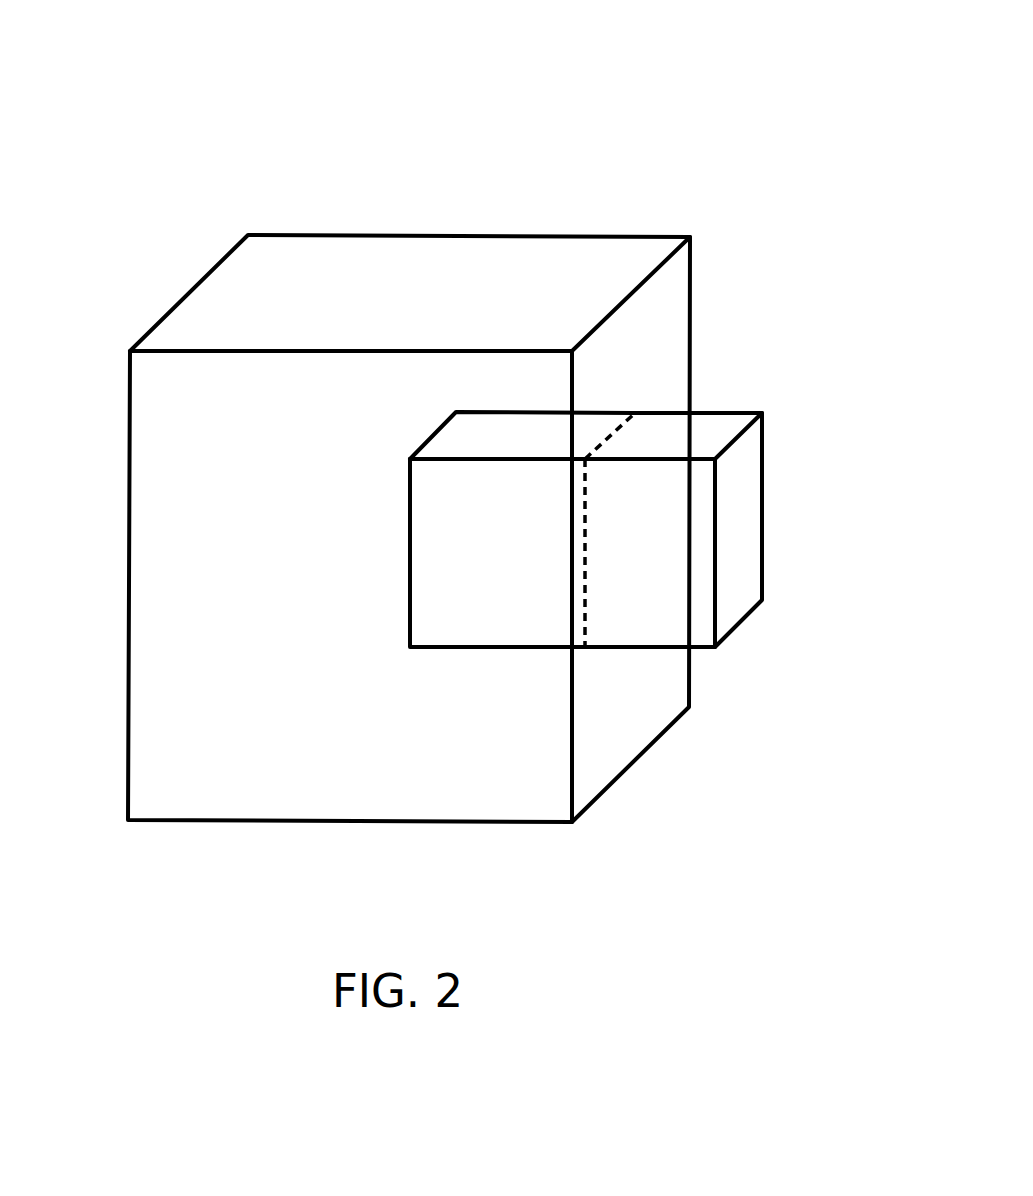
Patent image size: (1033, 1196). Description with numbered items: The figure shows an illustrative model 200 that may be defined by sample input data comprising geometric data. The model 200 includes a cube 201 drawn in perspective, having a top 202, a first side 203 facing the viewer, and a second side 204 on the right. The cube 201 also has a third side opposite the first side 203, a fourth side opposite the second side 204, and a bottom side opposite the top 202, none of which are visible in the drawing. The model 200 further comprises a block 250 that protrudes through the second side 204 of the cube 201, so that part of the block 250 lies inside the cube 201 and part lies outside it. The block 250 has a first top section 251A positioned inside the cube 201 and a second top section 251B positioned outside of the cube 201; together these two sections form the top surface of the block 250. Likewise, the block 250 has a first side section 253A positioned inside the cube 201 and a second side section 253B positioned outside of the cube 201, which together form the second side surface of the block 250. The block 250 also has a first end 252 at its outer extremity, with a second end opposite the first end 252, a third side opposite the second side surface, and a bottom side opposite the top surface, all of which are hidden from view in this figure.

The model 200 is at (680, 68).
The cube 201 is at (658, 228).
The top 202 is at (526, 248).
The first side 203 is at (146, 398).
The second side 204 is at (663, 317).
The block 250 is at (712, 398).
The first top section 251A is at (472, 430).
The second top section 251B is at (717, 433).
The first end 252 is at (743, 564).
The first side section 253A is at (424, 598).
The second side section 253B is at (693, 641).